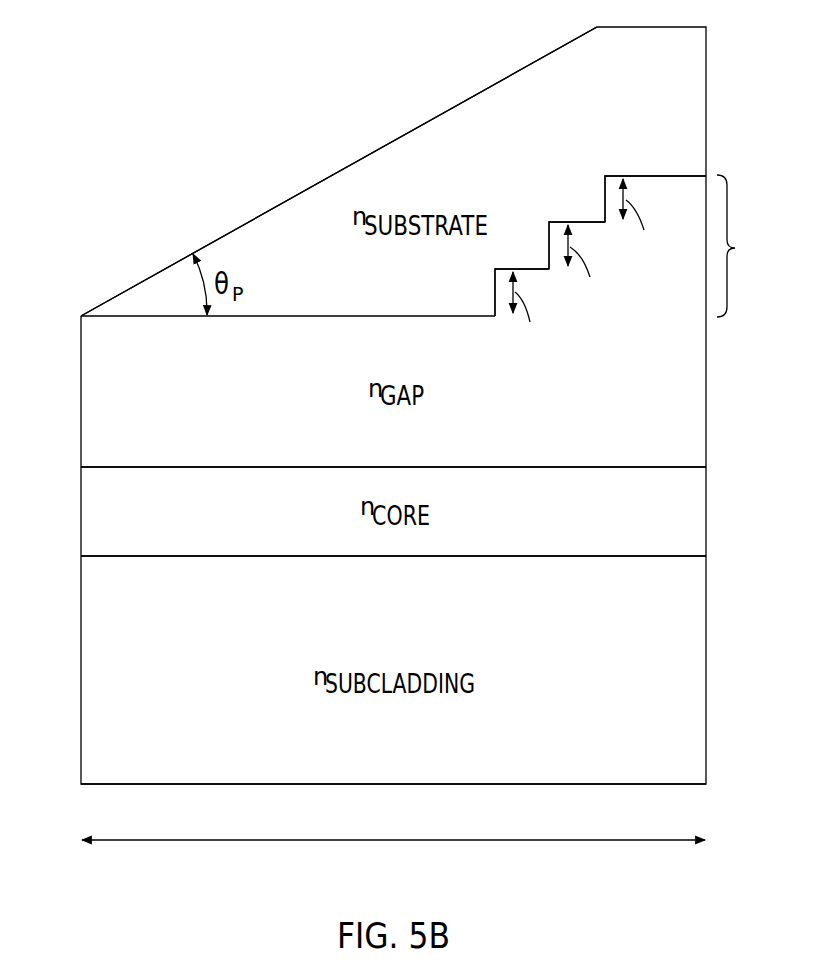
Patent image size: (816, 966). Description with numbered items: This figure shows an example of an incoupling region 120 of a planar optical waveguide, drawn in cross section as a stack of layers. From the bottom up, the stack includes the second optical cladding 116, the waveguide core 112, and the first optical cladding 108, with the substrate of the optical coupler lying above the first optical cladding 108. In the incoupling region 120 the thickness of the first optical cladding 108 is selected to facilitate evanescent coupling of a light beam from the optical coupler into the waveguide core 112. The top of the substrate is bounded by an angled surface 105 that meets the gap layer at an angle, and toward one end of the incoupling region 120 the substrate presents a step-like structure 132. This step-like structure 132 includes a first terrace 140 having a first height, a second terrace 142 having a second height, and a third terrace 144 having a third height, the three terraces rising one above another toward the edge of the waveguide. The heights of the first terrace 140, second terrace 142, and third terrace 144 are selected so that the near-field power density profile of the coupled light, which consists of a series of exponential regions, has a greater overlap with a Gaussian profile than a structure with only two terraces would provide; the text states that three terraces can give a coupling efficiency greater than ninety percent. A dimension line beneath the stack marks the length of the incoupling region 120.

The angled facet surface of substrate 105 is at (340, 170).
The first optical cladding 108 is at (79, 397).
The waveguide core 112 is at (79, 512).
The second optical cladding 116 is at (79, 662).
The incoupling region 120 is at (392, 842).
The step-like structure 132 is at (633, 246).
The first terrace 140 is at (533, 270).
The second terrace 142 is at (588, 224).
The third terrace 144 is at (637, 178).